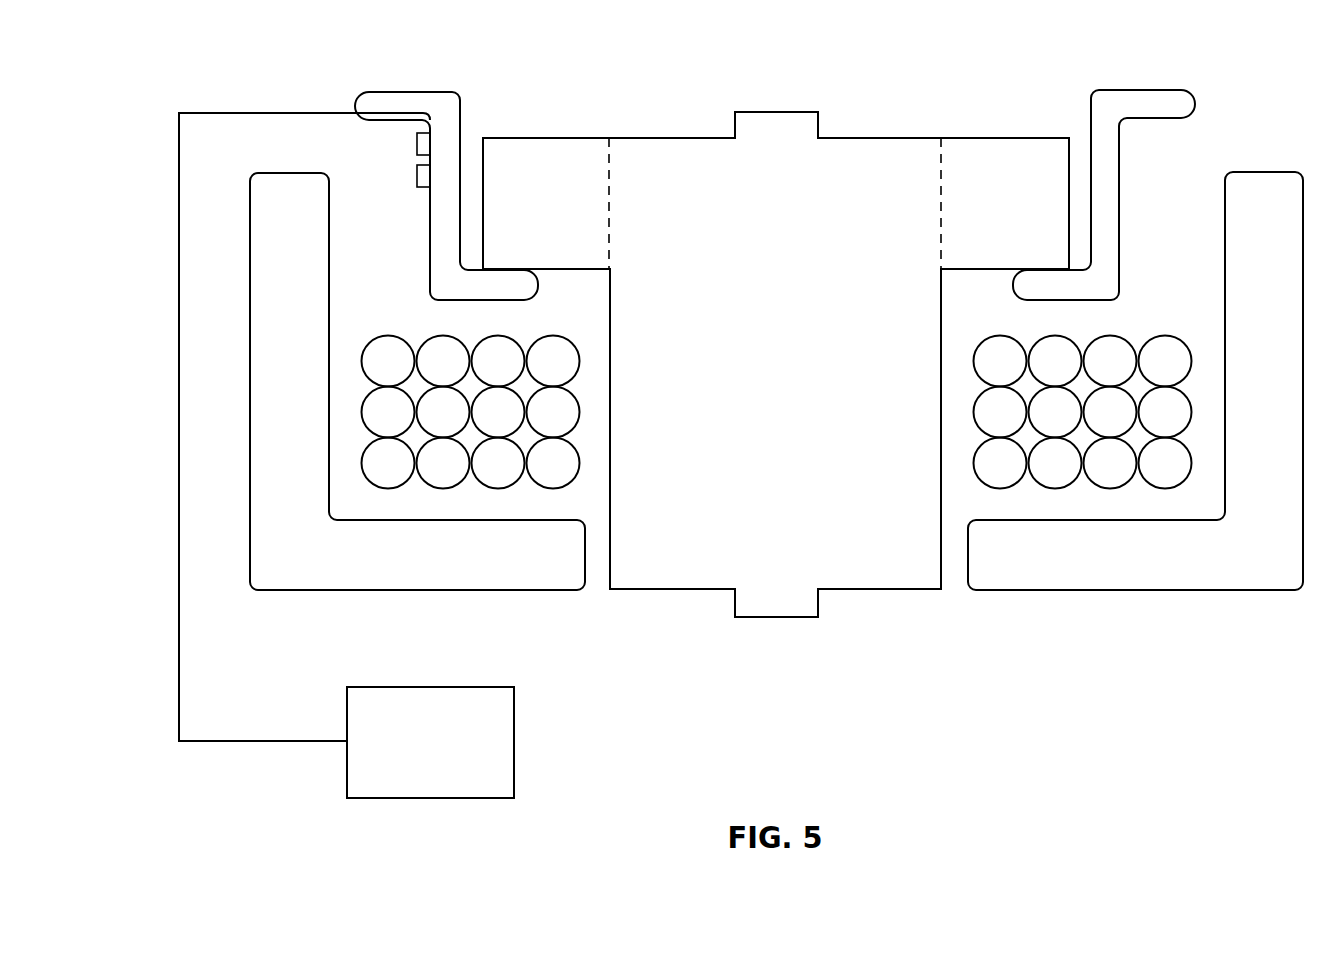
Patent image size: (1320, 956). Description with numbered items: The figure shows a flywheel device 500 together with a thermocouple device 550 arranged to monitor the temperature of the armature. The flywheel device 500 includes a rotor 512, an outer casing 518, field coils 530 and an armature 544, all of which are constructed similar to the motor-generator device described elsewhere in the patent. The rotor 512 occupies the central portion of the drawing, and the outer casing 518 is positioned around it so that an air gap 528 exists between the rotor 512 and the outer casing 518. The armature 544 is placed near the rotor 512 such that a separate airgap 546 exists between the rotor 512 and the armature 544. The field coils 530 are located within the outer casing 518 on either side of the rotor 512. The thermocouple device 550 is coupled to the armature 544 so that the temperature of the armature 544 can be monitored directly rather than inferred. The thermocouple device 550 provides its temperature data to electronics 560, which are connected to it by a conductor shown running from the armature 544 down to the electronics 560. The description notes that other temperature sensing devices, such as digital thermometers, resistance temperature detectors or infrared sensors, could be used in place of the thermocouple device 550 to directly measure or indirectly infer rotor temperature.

The flywheel device 500 is at (753, 56).
The rotor 512 is at (690, 589).
The outer casing 518 is at (535, 590).
The air gap 528 is at (600, 563).
The field coils 530 is at (443, 490).
The armature 544 is at (383, 91).
The airgap 546 is at (1069, 210).
The thermocouple device 550 is at (417, 175).
The electronics 560 is at (514, 748).